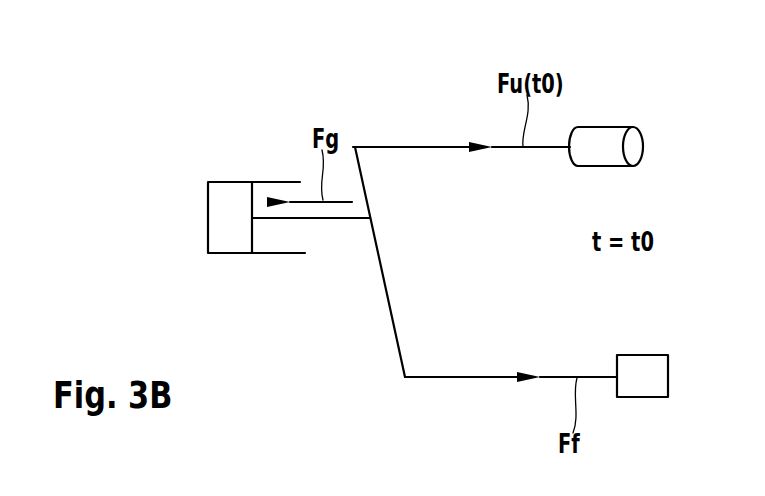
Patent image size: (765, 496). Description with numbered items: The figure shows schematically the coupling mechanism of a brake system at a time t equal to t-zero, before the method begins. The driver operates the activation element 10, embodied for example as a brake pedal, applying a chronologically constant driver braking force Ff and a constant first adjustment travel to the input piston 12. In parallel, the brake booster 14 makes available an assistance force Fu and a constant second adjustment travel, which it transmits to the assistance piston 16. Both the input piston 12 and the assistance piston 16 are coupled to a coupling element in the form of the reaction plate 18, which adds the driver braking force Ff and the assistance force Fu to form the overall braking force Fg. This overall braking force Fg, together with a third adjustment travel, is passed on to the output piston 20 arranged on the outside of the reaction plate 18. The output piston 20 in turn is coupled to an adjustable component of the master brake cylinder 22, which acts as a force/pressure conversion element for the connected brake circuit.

The activation element 10 is at (637, 452).
The input piston 12 is at (462, 427).
The brake booster 14 is at (603, 128).
The assistance piston 16 is at (417, 147).
The reaction plate 18 is at (438, 300).
The output piston 20 is at (337, 270).
The master brake cylinder 22 is at (225, 310).